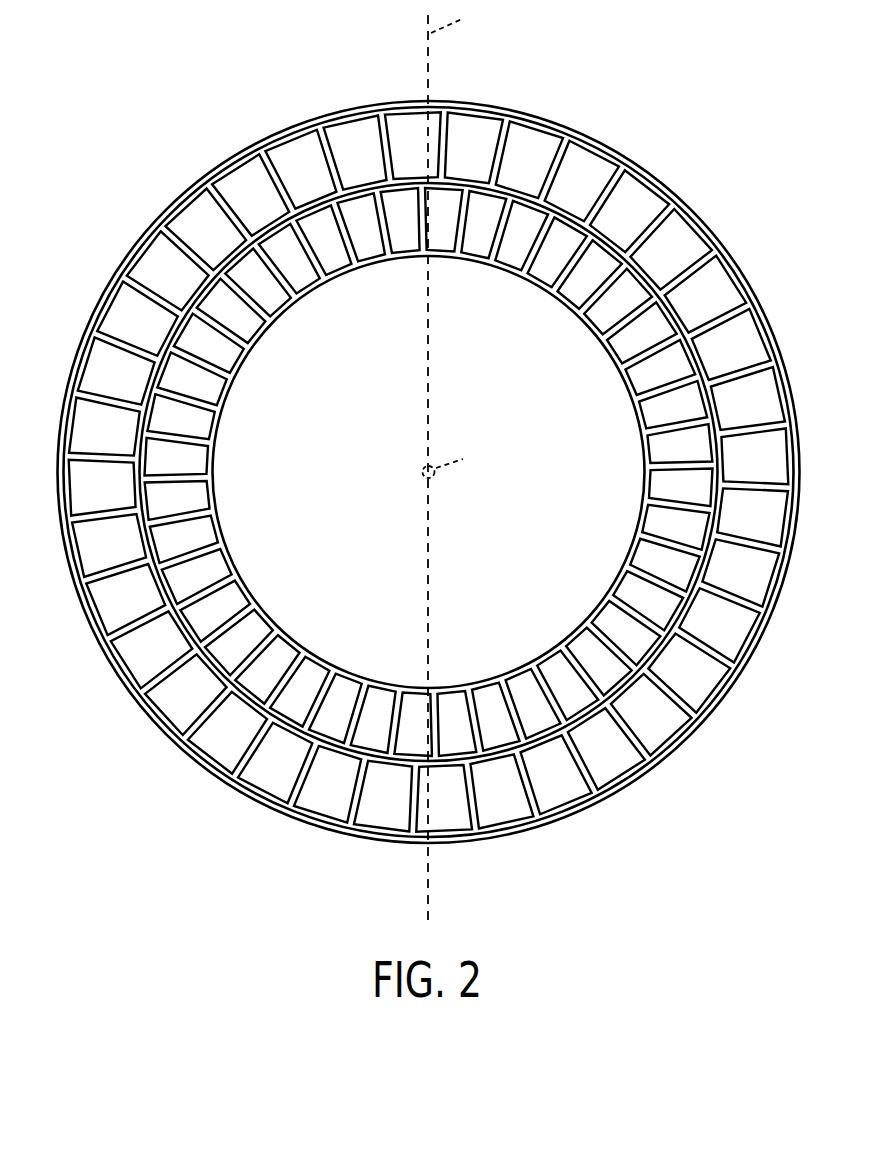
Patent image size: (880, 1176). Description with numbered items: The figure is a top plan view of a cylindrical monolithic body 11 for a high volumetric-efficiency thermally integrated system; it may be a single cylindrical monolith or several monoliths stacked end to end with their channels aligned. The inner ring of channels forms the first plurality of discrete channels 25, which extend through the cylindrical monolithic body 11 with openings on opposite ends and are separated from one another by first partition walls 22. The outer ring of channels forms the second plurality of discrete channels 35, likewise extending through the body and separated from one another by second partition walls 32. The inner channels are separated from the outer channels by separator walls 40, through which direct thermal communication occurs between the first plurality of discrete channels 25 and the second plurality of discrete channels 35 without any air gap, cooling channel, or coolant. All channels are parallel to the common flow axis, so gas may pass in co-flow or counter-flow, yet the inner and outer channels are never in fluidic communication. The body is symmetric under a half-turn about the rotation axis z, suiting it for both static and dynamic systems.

The cylindrical monolithic body 11 is at (223, 80).
The first partition walls 22 is at (187, 517).
The first plurality of discrete channels 25 is at (240, 325).
The second partition walls 32 is at (208, 710).
The second plurality of discrete channels 35 is at (718, 285).
The separator walls 40 is at (587, 713).